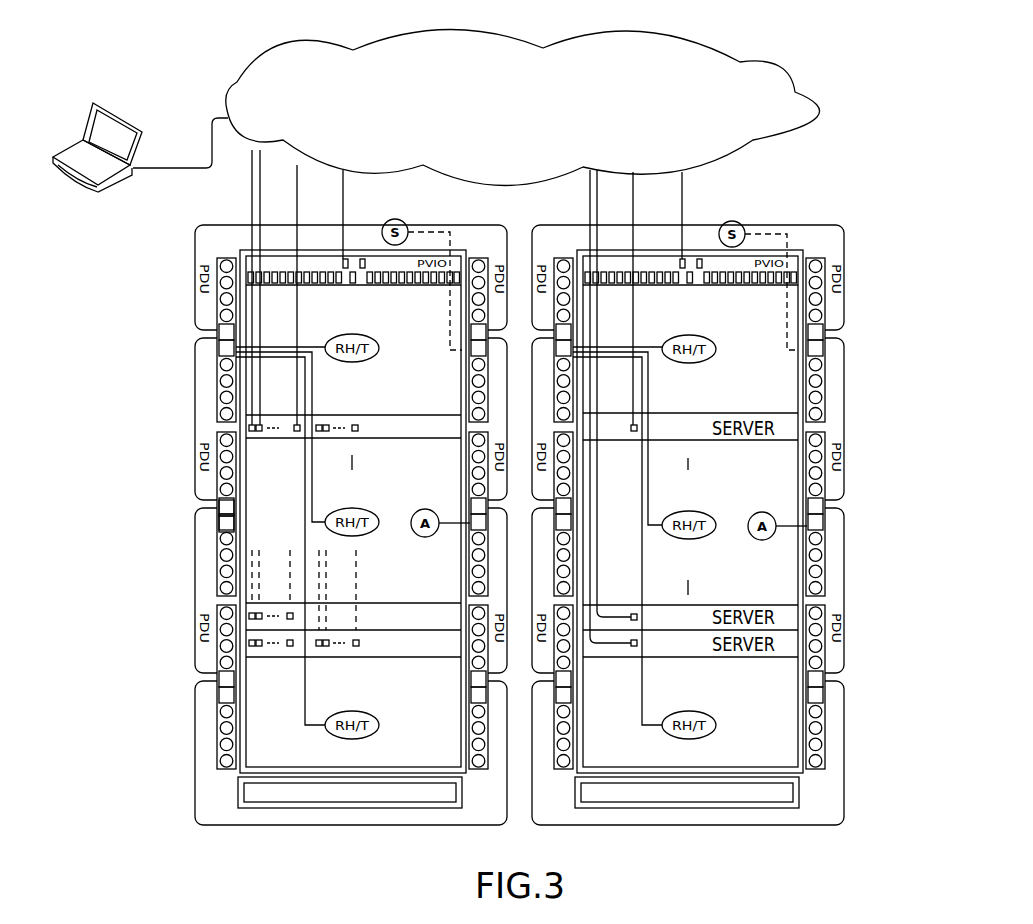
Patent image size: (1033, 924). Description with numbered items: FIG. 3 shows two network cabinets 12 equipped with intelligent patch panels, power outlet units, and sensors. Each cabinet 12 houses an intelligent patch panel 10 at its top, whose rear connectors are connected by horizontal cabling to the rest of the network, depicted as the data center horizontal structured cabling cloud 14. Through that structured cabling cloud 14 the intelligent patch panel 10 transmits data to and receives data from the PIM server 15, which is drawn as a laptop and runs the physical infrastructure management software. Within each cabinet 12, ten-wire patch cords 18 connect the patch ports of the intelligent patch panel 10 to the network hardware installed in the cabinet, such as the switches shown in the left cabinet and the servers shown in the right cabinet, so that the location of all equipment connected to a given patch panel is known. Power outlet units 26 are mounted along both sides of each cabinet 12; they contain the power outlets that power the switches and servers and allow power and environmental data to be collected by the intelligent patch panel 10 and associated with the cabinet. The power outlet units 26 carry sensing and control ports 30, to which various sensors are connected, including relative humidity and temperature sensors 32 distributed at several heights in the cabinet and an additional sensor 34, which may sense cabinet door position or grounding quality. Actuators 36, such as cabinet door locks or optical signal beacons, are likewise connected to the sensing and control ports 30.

The intelligent patch panel 10 is at (464, 254).
The cabinet 12 is at (280, 479).
The structured cabling cloud 14 is at (767, 62).
The PIM server 15 is at (120, 117).
The ten-wire patch cord 18 is at (180, 282).
The power outlet unit 26 is at (217, 537).
The sensing and control port 30 is at (215, 357).
The relative humidity and temperature sensor 32 is at (375, 355).
The additional sensor 34 is at (384, 223).
The actuator 36 is at (414, 513).